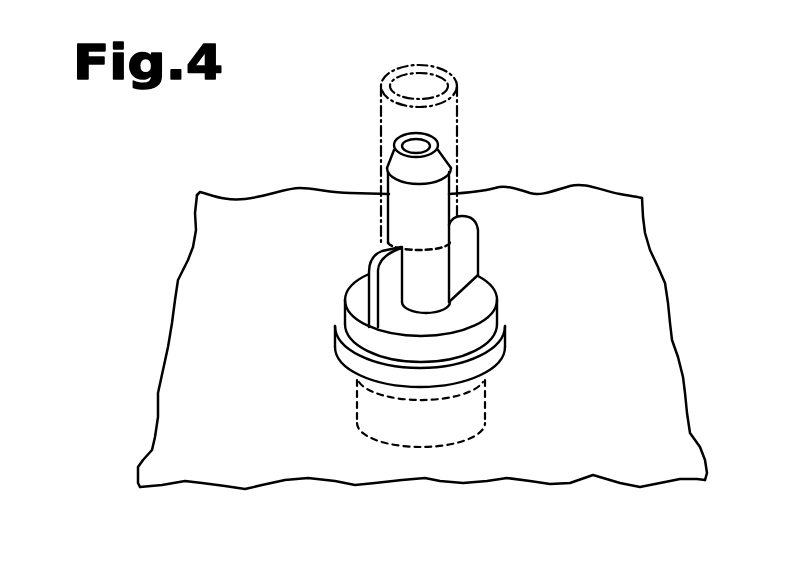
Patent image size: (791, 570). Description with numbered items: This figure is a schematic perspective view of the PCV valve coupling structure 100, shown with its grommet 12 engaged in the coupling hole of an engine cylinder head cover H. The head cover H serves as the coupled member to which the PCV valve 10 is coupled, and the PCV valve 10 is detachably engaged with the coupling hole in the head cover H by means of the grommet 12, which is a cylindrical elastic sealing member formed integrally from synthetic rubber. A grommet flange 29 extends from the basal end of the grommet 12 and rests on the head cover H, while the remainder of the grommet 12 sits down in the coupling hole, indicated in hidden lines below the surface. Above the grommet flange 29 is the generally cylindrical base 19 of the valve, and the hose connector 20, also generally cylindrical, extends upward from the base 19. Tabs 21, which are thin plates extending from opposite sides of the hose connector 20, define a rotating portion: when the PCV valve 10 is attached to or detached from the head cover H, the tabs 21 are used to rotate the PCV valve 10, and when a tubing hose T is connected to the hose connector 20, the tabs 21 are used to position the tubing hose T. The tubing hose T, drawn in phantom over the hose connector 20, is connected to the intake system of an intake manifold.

The PCV valve coupling structure 100 is at (571, 133).
The PCV valve 10 is at (492, 205).
The hose connector 20 is at (401, 204).
The tabs 21 is at (369, 271).
The base 19 is at (480, 297).
The grommet flange 29 is at (349, 337).
The grommet 12 is at (487, 400).
The engine cylinder head cover H is at (188, 261).
The tubing hose T is at (381, 122).